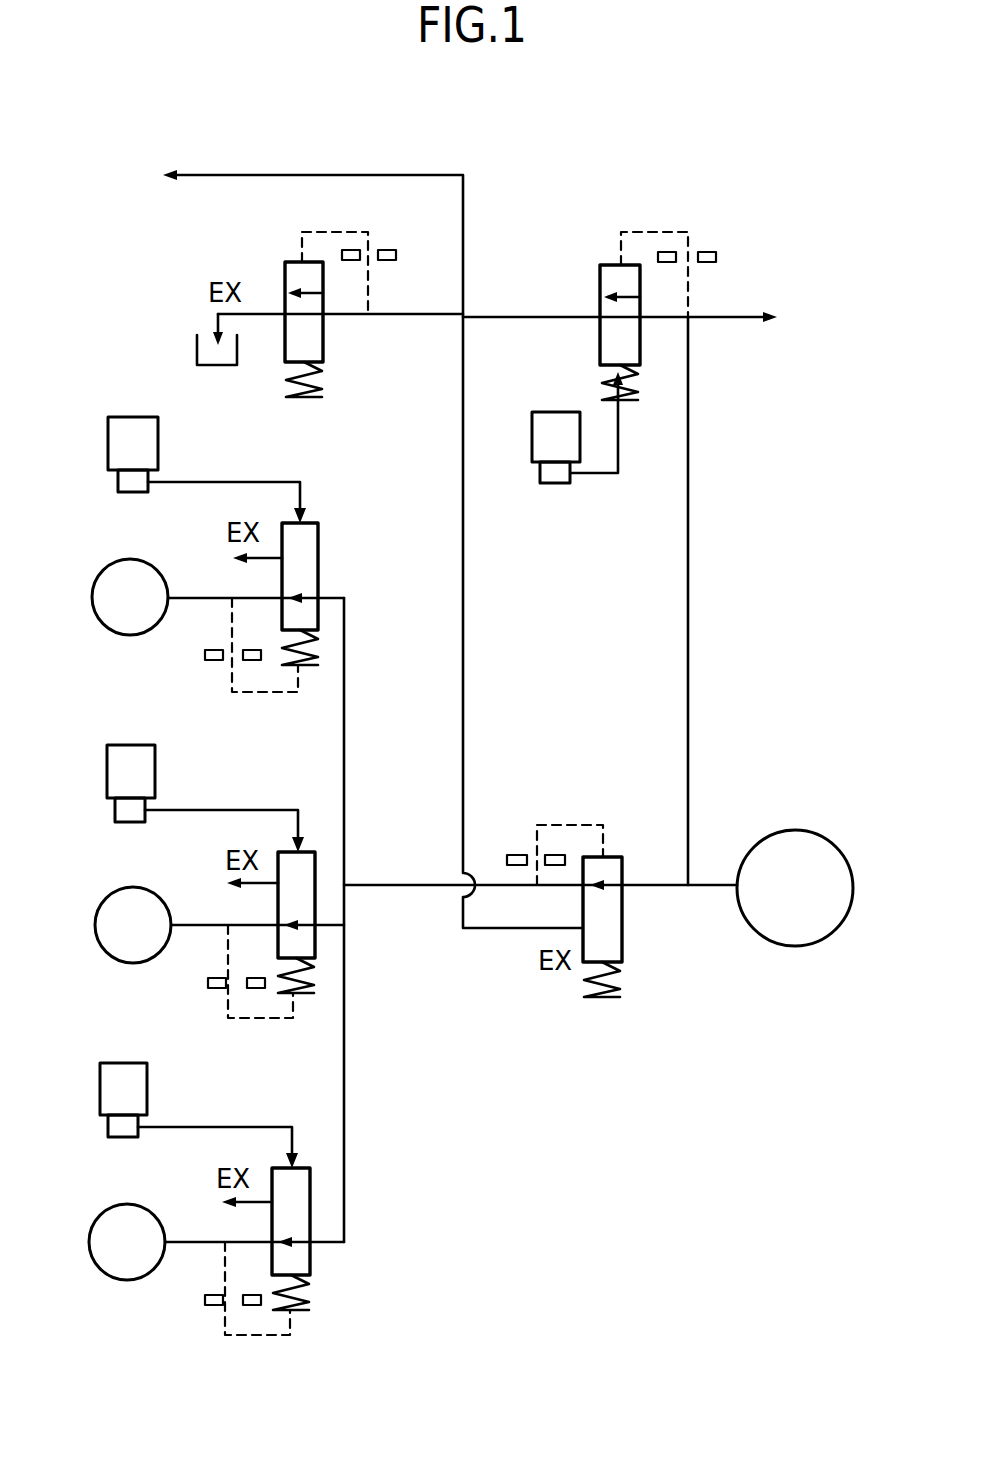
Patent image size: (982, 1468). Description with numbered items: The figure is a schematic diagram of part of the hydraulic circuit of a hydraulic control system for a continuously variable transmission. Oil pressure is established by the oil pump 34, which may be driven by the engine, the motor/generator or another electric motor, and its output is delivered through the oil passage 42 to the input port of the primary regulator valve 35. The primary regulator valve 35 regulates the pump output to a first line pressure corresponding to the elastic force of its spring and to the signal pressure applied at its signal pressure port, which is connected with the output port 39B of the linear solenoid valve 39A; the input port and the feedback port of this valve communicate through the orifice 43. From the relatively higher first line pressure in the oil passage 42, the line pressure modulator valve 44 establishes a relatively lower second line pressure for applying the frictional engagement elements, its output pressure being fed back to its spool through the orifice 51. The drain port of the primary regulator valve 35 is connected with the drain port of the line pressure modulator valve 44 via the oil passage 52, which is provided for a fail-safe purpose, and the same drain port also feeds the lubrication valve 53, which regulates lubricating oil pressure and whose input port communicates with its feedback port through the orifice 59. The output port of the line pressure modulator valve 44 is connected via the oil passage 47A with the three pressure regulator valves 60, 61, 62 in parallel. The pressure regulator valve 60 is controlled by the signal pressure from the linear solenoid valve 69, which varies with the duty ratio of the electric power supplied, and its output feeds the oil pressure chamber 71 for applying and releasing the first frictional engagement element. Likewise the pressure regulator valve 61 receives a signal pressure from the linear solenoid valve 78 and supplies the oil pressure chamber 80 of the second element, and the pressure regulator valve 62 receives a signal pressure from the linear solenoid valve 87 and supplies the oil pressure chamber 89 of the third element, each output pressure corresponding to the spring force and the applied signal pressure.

The oil pump 34 is at (797, 933).
The primary regulator valve 35 is at (587, 288).
The linear solenoid valve 39A is at (565, 505).
The output port 39B is at (572, 477).
The oil passage 42 is at (690, 398).
The orifice 43 is at (707, 252).
The line pressure modulator valve 44 is at (641, 965).
The oil passage 47A is at (403, 884).
The orifice 51 is at (516, 855).
The oil passage 52 is at (465, 598).
The lubrication valve 53 is at (340, 350).
The orifice 59 is at (387, 250).
The pressure regulator valve 60 is at (333, 573).
The pressure regulator valve 61 is at (308, 818).
The pressure regulator valve 62 is at (312, 1146).
The linear solenoid valve 69 is at (130, 433).
The oil pressure chamber 71 is at (127, 571).
The linear solenoid valve 78 is at (132, 752).
The oil pressure chamber 80 is at (137, 903).
The linear solenoid valve 87 is at (128, 1073).
The oil pressure chamber 89 is at (130, 1214).